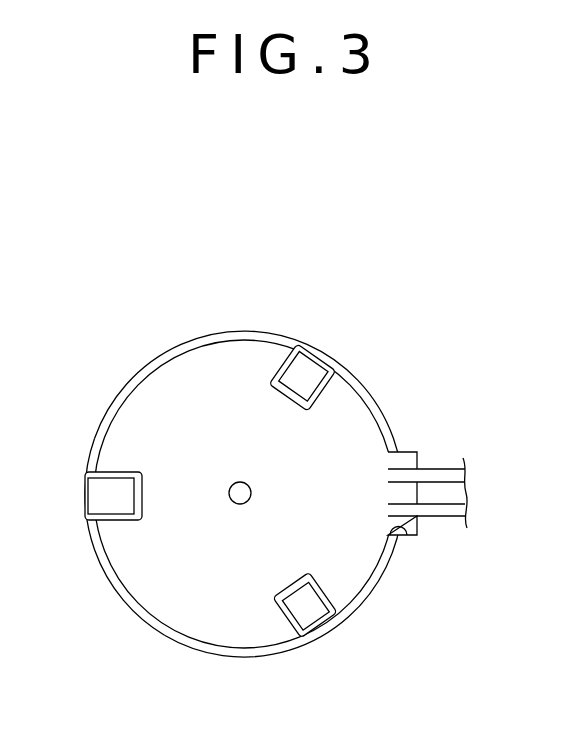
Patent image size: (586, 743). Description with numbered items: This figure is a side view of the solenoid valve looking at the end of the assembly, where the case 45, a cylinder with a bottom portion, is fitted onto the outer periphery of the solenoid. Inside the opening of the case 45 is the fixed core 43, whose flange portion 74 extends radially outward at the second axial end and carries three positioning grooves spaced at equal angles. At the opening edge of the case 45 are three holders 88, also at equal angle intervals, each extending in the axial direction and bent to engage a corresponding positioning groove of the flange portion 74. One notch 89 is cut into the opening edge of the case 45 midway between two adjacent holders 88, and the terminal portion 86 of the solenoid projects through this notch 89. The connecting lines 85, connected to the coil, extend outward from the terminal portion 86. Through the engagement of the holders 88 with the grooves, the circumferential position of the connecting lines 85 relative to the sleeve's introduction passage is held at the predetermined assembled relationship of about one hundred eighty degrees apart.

The fixed core 43 is at (112, 566).
The case 45 is at (119, 401).
The flange portion 74 is at (178, 390).
The connecting lines 85 is at (472, 470).
The terminal portion 86 is at (407, 451).
The holders 88 is at (103, 495).
The notch 89 is at (402, 531).